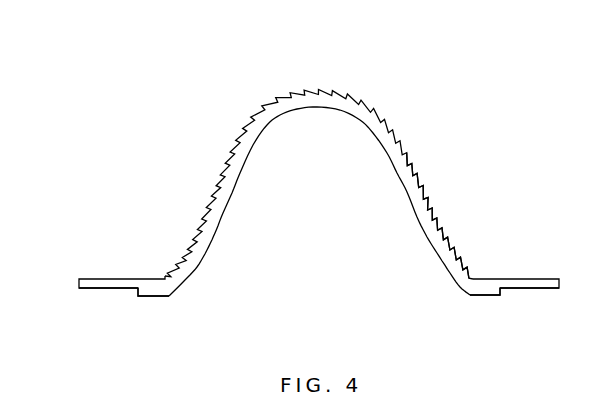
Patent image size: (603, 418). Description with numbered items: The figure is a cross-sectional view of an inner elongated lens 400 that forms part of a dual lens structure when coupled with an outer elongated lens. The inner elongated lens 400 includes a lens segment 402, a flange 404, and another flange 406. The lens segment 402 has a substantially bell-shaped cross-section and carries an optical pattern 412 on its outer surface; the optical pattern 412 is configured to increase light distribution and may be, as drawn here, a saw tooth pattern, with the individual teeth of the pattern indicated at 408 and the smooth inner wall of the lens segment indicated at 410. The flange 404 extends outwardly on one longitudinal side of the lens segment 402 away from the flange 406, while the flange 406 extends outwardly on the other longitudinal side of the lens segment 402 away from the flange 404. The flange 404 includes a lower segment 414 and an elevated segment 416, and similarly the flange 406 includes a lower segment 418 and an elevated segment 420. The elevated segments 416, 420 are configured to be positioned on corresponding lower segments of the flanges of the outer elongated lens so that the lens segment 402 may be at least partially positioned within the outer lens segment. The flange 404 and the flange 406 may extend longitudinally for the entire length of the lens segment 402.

The inner elongated lens 400 is at (80, 78).
The lens segment 402 is at (430, 237).
The flange 404 is at (110, 278).
The flange 406 is at (517, 277).
The textured ridges 408 is at (448, 250).
The inner surface 410 is at (398, 178).
The optical pattern 412 is at (377, 110).
The lower segment 414 is at (150, 297).
The elevated segment 416 is at (85, 292).
The lower segment 418 is at (488, 298).
The elevated segment 420 is at (537, 292).